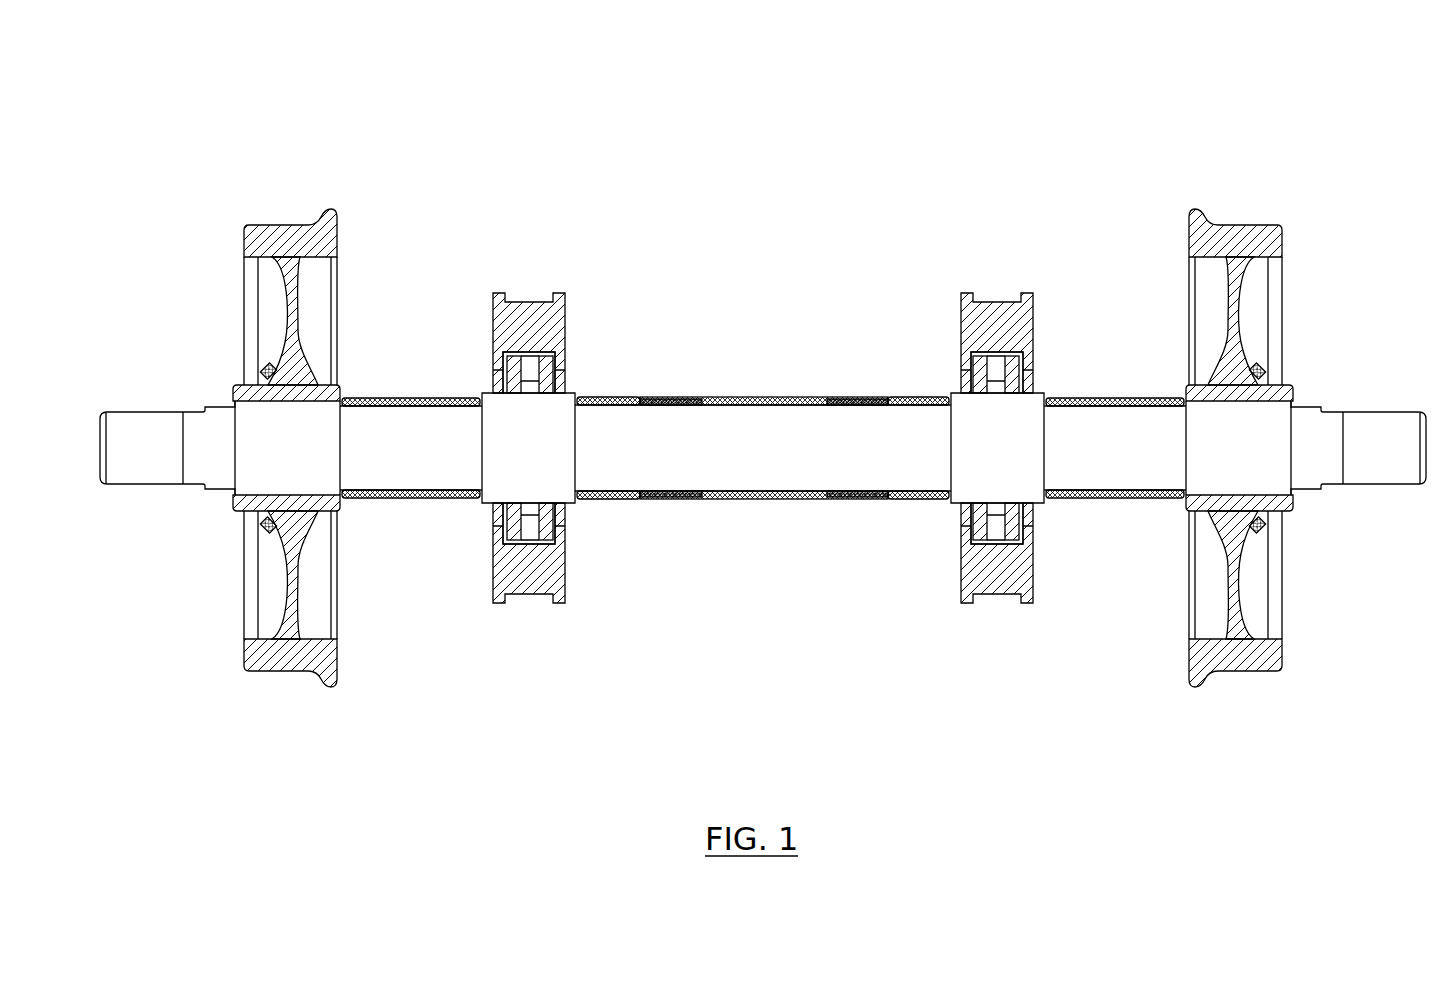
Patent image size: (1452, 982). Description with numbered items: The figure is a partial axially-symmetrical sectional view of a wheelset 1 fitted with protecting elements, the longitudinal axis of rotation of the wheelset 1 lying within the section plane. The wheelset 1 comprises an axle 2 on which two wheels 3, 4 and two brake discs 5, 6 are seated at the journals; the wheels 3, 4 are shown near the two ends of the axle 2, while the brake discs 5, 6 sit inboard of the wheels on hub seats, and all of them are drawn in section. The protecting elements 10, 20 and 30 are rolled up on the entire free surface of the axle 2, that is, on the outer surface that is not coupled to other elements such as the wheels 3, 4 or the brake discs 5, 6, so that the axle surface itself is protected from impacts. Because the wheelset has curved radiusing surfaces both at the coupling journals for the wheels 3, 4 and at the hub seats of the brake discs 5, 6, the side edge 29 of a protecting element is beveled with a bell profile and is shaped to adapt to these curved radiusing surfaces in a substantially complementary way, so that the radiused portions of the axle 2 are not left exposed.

The wheelset 1 is at (679, 266).
The axle 2 is at (138, 435).
The wheel 3 is at (322, 210).
The wheel 4 is at (1247, 222).
The brake disc 5 is at (532, 302).
The brake disc 6 is at (1003, 302).
The protecting element 10 is at (423, 498).
The protecting element 20 is at (795, 499).
The side edge 29 is at (583, 498).
The protecting element 30 is at (945, 500).